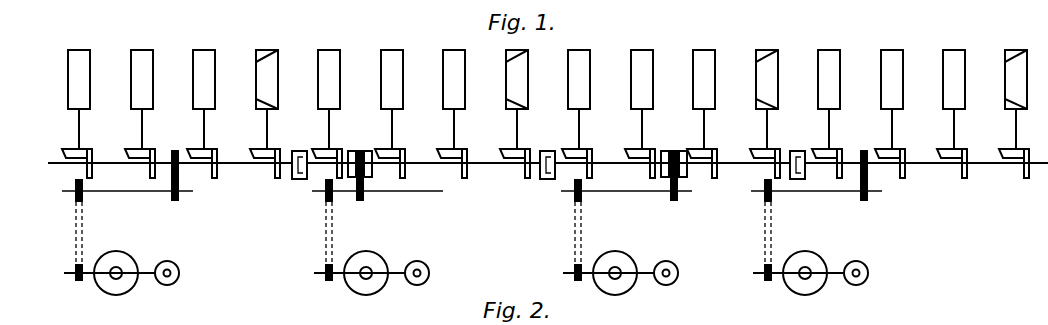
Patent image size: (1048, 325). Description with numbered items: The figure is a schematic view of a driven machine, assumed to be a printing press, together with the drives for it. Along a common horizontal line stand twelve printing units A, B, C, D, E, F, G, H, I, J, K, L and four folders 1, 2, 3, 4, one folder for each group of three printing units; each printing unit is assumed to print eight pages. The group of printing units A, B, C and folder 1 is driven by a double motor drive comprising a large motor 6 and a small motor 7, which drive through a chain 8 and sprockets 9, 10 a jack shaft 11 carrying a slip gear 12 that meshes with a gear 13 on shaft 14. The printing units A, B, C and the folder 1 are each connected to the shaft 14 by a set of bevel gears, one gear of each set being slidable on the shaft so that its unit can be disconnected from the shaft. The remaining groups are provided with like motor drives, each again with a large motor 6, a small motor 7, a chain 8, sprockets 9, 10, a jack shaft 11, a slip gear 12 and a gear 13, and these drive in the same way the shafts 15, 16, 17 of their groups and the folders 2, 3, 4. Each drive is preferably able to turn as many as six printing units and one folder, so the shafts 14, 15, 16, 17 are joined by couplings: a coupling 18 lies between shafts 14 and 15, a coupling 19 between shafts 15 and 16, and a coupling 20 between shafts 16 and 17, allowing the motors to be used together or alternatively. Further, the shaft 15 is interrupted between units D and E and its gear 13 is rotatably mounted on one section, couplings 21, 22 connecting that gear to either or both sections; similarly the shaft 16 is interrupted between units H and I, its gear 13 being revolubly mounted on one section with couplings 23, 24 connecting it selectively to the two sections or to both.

The folder 1 is at (1014, 106).
The folder 2 is at (765, 106).
The folder 3 is at (515, 106).
The folder 4 is at (265, 106).
The large motor 6 is at (101, 286).
The small motor 7 is at (176, 283).
The chain 8 is at (74, 237).
The sprocket 9 is at (74, 269).
The sprocket 10 is at (74, 196).
The jack shaft 11 is at (113, 192).
The slip gear 12 is at (180, 197).
The gear 13 is at (180, 140).
The shaft 14 is at (947, 164).
The shaft 15 is at (622, 146).
The shaft 16 is at (436, 146).
The shaft 17 is at (118, 146).
The coupling 18 is at (798, 150).
The coupling 19 is at (548, 150).
The coupling 20 is at (299, 150).
The coupling 21 is at (684, 150).
The coupling 22 is at (665, 150).
The coupling 23 is at (369, 150).
The coupling 24 is at (352, 150).
The printing unit A is at (952, 106).
The printing unit B is at (890, 106).
The printing unit C is at (827, 106).
The printing unit D is at (702, 106).
The printing unit E is at (640, 106).
The printing unit F is at (577, 106).
The printing unit G is at (452, 106).
The printing unit H is at (390, 106).
The printing unit I is at (327, 106).
The printing unit J is at (202, 106).
The printing unit K is at (140, 106).
The printing unit L is at (77, 106).